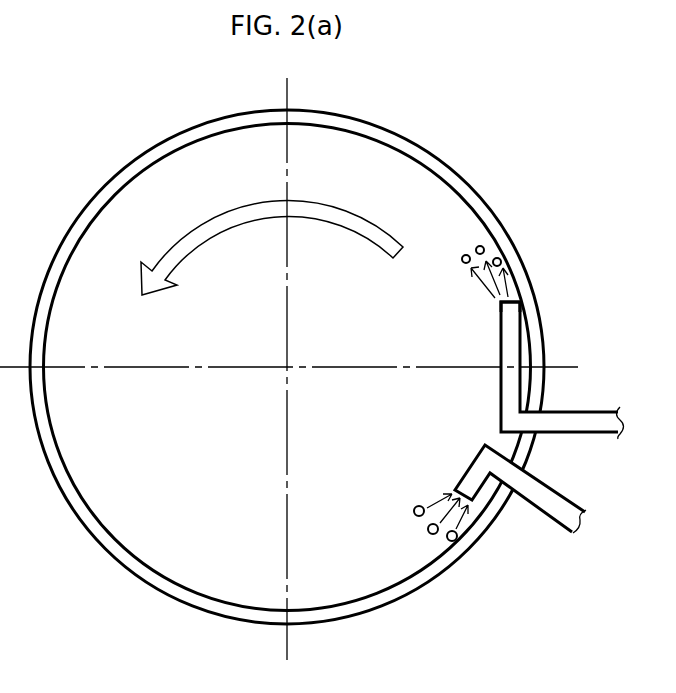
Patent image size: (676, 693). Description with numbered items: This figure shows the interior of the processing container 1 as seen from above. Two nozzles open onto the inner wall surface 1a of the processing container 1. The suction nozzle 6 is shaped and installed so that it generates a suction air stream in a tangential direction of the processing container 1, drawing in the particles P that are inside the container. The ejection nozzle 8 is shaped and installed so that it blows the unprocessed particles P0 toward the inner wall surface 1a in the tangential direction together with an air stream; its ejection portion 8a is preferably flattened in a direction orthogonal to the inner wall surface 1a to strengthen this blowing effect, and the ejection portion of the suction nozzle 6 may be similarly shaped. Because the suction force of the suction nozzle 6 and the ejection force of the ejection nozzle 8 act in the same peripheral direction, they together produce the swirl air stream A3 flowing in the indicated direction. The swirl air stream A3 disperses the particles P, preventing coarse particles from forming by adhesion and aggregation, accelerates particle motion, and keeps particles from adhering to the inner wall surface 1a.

The processing container 1 is at (438, 153).
The inner wall surface 1a is at (462, 203).
The ejection nozzle 8 is at (592, 414).
The ejection portion 8a is at (514, 316).
The suction nozzle 6 is at (552, 499).
The swirl air stream A3 is at (230, 211).
The unprocessed particles P0 is at (485, 247).
The particles P is at (458, 540).